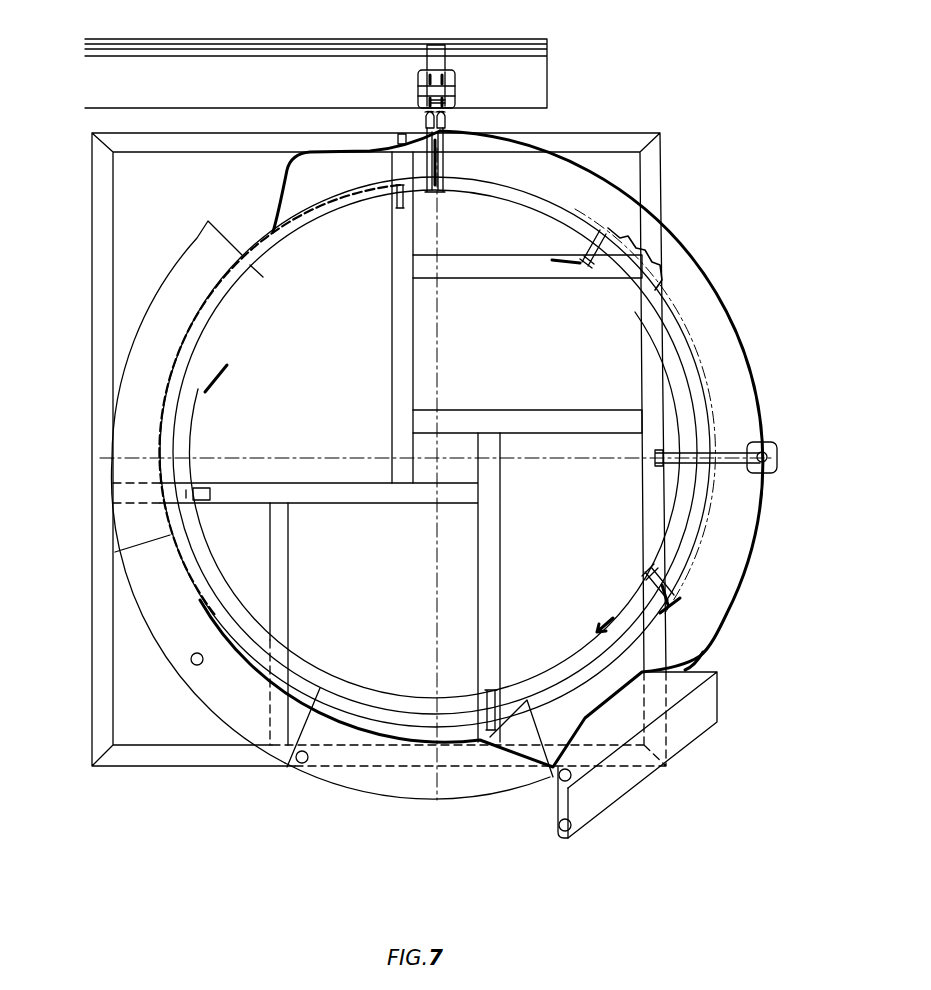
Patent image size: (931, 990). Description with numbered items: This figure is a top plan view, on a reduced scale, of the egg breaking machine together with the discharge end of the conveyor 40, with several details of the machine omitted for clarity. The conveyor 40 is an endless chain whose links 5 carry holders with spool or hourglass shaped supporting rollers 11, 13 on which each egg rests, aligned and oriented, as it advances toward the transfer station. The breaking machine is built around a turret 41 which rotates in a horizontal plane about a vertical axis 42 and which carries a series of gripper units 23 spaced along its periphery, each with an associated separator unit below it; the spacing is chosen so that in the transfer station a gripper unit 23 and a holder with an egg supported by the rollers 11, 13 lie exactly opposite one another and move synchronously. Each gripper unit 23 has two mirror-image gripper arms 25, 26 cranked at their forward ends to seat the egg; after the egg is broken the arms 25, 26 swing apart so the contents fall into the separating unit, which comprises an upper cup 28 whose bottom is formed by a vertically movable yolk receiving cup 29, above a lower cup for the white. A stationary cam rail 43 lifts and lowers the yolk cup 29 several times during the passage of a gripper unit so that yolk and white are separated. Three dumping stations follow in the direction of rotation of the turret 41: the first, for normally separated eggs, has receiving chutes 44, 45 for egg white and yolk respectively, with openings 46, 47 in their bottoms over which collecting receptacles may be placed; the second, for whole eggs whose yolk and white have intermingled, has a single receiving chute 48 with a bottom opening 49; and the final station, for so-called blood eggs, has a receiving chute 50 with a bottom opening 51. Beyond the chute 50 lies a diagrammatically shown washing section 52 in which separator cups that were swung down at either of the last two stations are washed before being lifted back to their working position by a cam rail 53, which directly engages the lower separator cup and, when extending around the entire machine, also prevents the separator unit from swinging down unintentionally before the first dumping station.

The conveyor 40 is at (362, 46).
The chain link 5 is at (447, 62).
The supporting roller 11 is at (418, 82).
The second supporting roller 13 is at (418, 98).
The gripper unit 23 is at (462, 124).
The gripper arm 25 is at (443, 145).
The gripper arm 26 is at (398, 142).
The upper cup 28 is at (772, 462).
The yolk receiving cup 29 is at (768, 454).
The turret 41 is at (683, 545).
The vertical axis 42 is at (437, 458).
The stationary cam rail 43 is at (658, 290).
The receiving chute 44 is at (695, 670).
The receiving chute 45 is at (710, 700).
The opening 46 is at (560, 782).
The opening 47 is at (572, 827).
The receiving chute 48 is at (495, 790).
The bottom opening 49 is at (302, 764).
The receiving chute 50 is at (228, 715).
The bottom opening 51 is at (205, 664).
The washing section 52 is at (197, 240).
The cam rail 53 is at (282, 204).